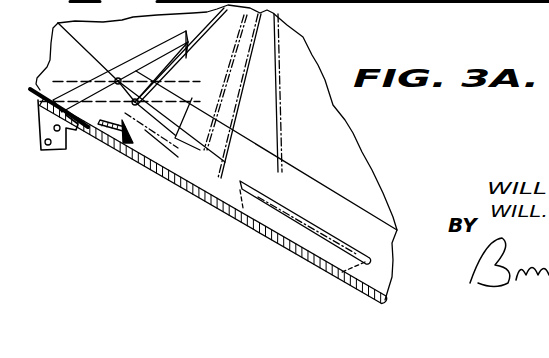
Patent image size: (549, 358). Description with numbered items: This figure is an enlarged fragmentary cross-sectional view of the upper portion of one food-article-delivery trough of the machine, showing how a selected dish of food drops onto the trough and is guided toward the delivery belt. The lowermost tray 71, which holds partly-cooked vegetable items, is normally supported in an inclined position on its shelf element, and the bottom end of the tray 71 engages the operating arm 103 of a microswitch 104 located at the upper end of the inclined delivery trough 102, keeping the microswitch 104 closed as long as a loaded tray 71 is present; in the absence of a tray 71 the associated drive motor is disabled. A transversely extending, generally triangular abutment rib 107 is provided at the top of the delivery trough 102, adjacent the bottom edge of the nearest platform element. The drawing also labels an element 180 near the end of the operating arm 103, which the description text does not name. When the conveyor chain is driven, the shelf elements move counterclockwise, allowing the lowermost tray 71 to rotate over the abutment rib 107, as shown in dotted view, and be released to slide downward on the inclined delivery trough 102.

The tray 71 is at (146, 53).
The delivery trough 102 is at (222, 203).
The operating arm 103 is at (50, 80).
The microswitch 104 is at (55, 152).
The abutment rib 107 is at (123, 133).
The tab 180 is at (186, 61).